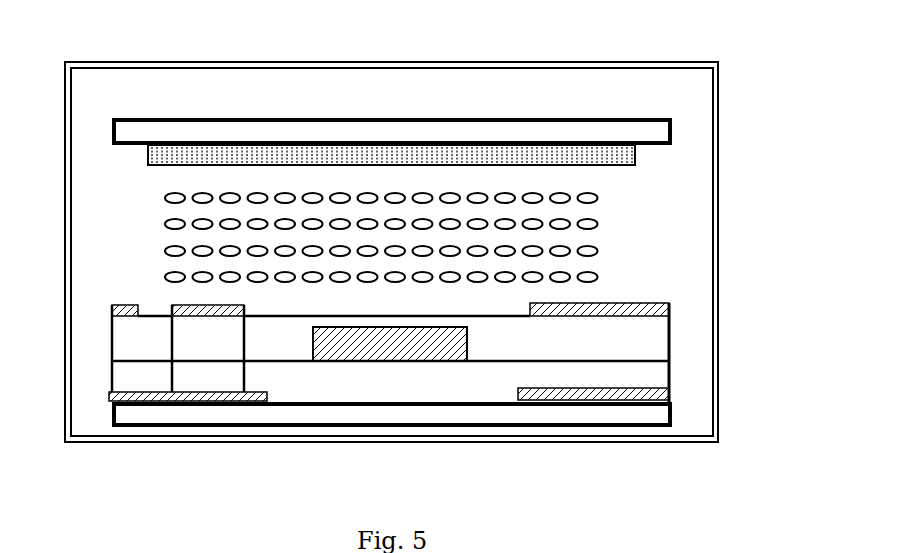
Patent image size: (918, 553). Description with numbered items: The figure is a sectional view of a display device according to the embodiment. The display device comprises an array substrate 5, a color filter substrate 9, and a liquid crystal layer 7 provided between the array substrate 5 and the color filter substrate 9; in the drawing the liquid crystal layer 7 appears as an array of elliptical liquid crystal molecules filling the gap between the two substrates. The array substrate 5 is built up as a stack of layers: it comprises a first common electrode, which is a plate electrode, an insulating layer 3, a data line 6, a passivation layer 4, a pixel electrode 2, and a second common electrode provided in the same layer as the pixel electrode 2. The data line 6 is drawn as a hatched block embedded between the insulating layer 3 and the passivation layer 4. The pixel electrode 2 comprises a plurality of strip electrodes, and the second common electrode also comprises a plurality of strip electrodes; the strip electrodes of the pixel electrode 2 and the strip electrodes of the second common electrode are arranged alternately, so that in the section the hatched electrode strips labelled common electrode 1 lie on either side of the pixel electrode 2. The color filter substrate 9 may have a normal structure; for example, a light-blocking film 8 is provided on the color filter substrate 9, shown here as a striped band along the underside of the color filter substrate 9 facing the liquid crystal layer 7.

The common electrode 1 is at (669, 305).
The pixel electrode 2 is at (170, 302).
The insulating layer 3 is at (133, 372).
The passivation layer 4 is at (133, 337).
The array substrate 5 is at (555, 410).
The data line 6 is at (395, 350).
The liquid crystal layer 7 is at (160, 236).
The light-blocking film 8 is at (245, 140).
The color filter substrate 9 is at (420, 133).